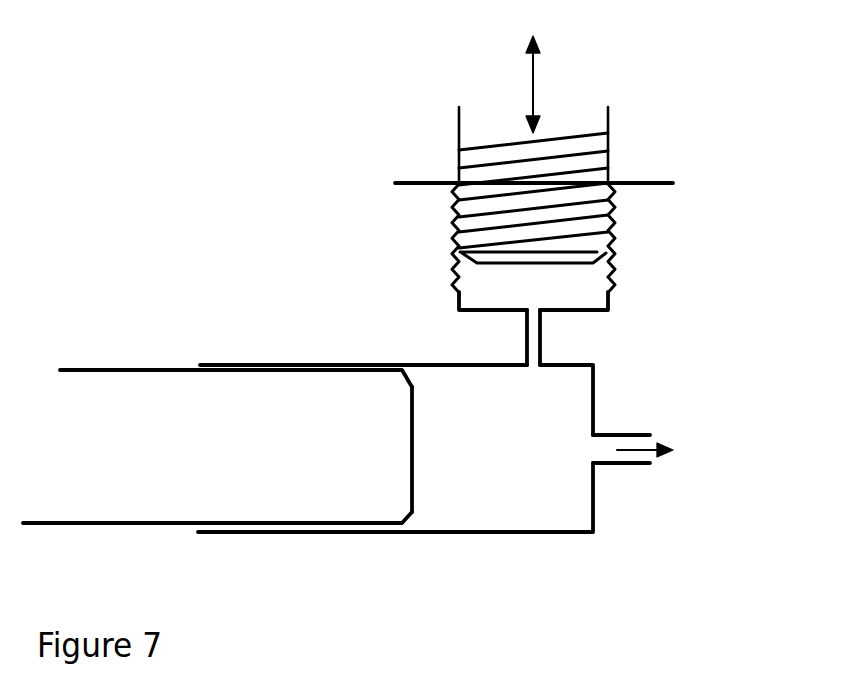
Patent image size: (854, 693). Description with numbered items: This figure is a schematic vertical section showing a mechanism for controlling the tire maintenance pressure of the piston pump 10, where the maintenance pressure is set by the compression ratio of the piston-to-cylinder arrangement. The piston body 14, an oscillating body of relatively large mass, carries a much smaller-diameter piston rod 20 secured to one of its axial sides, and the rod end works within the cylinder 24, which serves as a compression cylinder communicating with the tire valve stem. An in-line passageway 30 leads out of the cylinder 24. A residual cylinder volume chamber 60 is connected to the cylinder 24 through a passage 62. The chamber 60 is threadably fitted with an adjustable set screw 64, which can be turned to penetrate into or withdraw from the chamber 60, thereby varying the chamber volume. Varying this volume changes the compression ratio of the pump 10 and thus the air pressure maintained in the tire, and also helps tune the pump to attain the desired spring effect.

The piston pump 10 is at (357, 533).
The piston body 14 is at (118, 395).
The piston rod 20 is at (153, 500).
The cylinder 24 is at (459, 393).
The passageway 30 is at (603, 443).
The residual cylinder volume chamber 60 is at (478, 306).
The passage 62 is at (532, 349).
The adjustable set screw 64 is at (593, 160).